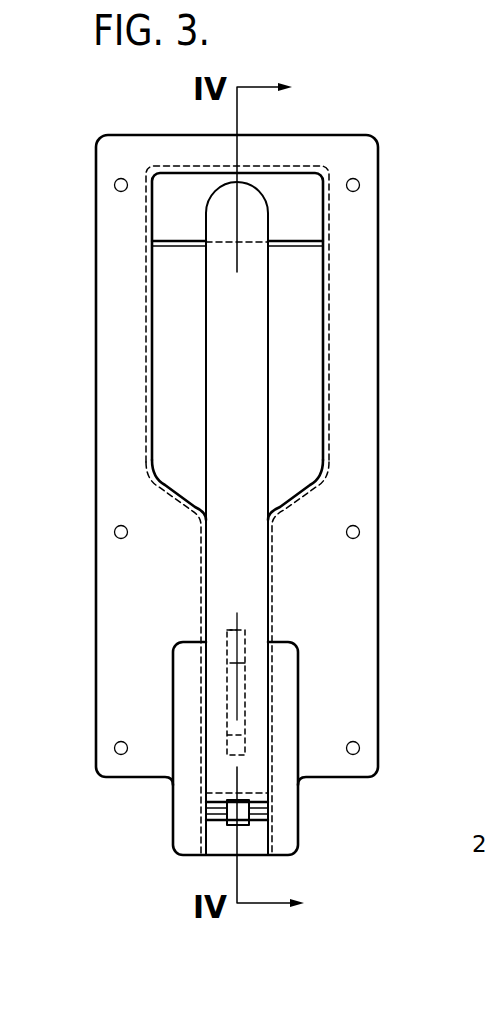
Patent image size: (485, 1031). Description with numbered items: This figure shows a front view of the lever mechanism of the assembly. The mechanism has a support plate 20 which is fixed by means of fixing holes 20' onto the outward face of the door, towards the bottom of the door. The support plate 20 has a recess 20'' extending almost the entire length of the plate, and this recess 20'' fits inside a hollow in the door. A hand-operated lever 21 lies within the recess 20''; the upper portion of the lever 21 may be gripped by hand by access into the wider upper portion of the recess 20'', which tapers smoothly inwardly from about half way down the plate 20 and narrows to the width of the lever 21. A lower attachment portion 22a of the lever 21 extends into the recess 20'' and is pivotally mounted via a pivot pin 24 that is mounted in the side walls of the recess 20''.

The support plate 20 is at (262, 495).
The fixing holes 20' is at (240, 492).
The recess 20'' is at (294, 510).
The hand-operated lever 21 is at (243, 597).
The lower attachment portion 22a is at (243, 770).
The pivot pin 24 is at (260, 808).